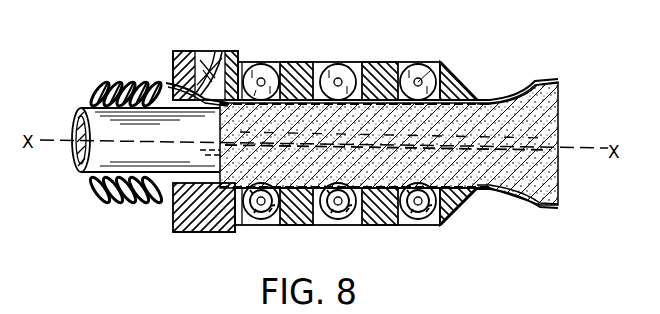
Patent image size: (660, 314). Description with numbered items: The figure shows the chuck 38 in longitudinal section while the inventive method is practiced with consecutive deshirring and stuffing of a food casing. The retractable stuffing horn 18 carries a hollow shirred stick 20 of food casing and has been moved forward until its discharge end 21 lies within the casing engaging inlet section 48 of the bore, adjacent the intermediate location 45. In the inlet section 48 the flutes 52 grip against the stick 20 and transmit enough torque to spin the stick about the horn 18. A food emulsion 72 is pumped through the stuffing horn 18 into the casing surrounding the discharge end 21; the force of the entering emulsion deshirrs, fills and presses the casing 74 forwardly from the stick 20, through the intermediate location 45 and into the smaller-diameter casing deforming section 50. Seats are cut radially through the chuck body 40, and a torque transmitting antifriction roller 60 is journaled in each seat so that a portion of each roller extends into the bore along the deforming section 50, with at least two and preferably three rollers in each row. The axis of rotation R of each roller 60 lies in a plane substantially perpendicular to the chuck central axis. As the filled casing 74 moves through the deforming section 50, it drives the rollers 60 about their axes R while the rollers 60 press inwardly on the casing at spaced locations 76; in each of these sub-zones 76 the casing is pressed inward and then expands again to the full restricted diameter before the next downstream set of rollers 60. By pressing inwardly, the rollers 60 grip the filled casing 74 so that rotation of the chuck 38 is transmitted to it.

The stuffing horn 18 is at (80, 170).
The shirred stick 20 is at (117, 80).
The discharge end 21 is at (226, 150).
The chuck 38 is at (220, 247).
The chuck body 40 is at (172, 232).
The intermediate location 45 is at (212, 86).
The casing engaging inlet section 48 is at (212, 75).
The casing deforming section 50 is at (372, 105).
The flutes 52 is at (200, 83).
The torque transmitting antifriction rollers 60 is at (339, 64).
The food emulsion 72 is at (537, 138).
The filled casing 74 is at (483, 100).
The spaced locations 76 is at (257, 104).
The axis of rotation R is at (424, 78).